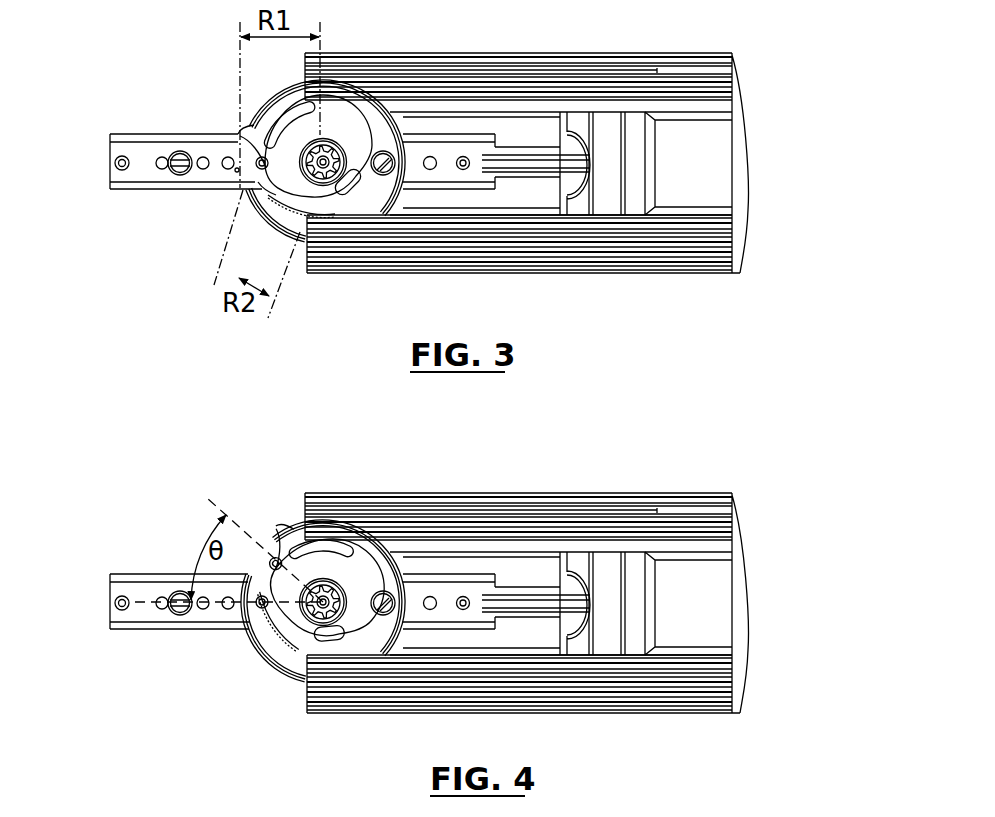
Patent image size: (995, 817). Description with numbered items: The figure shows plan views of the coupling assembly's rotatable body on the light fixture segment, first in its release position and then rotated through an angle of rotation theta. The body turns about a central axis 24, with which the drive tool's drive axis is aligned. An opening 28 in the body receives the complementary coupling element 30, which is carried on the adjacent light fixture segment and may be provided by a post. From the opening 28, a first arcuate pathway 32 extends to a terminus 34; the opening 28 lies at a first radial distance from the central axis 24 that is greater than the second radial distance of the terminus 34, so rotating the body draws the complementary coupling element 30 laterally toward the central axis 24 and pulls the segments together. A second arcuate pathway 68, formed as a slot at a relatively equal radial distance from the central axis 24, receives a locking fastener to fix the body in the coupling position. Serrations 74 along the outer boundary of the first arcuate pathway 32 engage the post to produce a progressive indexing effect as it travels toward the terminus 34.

In FIG. 3, the central axis 24 is at (327, 157).
In FIG. 3, the opening 28 is at (235, 168).
In FIG. 3, the complementary coupling element 30 is at (244, 147).
In FIG. 4, the complementary coupling element 30 is at (327, 584).
In FIG. 3, the first arcuate pathway 32 is at (258, 181).
In FIG. 3, the terminus 34 is at (341, 191).
In FIG. 3, the second arcuate pathway 68 is at (288, 112).
In FIG. 3, the serrations 74 is at (276, 202).